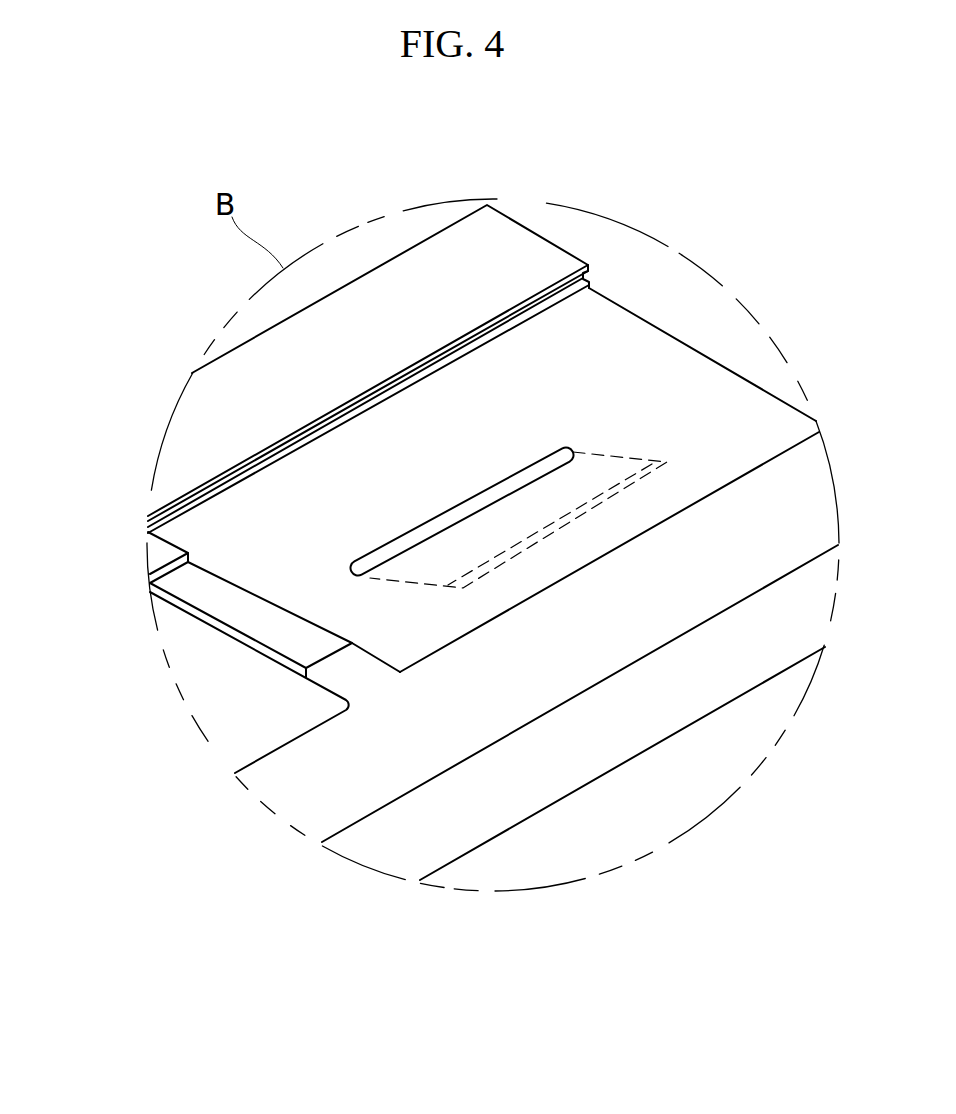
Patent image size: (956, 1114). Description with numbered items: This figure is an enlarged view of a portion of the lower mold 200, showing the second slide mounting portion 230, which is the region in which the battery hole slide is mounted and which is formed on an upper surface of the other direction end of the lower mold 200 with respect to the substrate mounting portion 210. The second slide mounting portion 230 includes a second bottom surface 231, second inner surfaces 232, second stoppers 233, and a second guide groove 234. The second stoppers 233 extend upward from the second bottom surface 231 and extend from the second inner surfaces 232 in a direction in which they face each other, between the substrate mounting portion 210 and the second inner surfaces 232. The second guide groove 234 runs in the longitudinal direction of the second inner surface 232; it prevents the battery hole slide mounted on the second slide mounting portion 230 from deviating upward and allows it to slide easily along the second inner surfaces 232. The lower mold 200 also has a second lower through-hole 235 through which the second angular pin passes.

The lower mold 200 is at (620, 765).
The substrate mounting portion 210 is at (233, 688).
The second slide mounting portion 230 is at (483, 671).
The second bottom surface 231 is at (283, 575).
The second inner surface 232 is at (365, 410).
The second stopper 233 is at (370, 652).
The second guide groove 234 is at (587, 278).
The second lower through-hole 235 is at (540, 472).